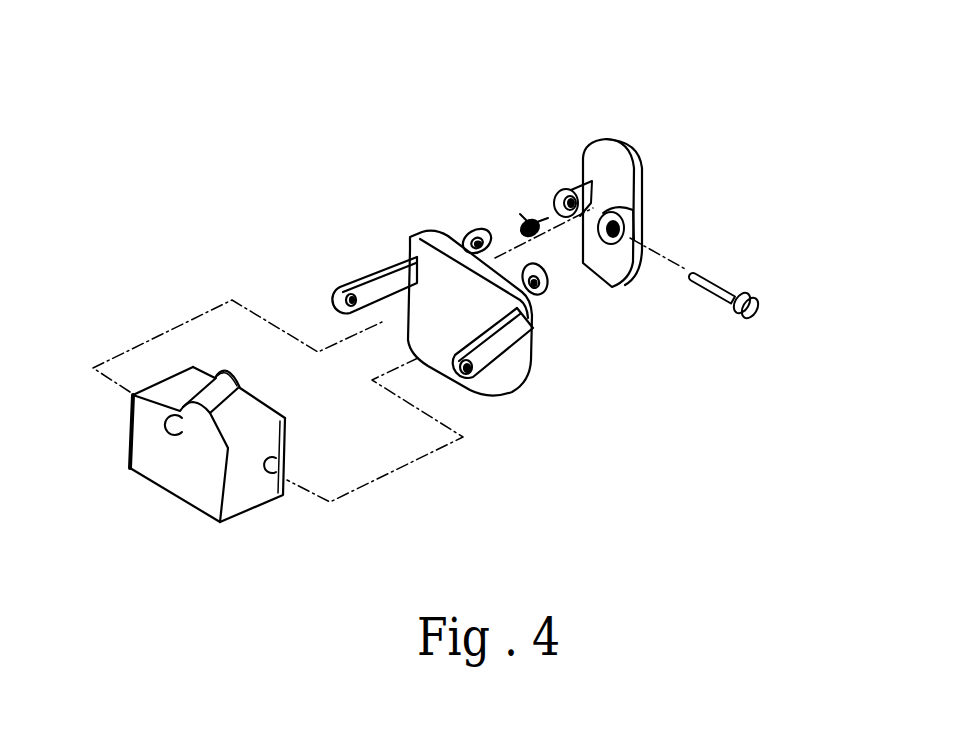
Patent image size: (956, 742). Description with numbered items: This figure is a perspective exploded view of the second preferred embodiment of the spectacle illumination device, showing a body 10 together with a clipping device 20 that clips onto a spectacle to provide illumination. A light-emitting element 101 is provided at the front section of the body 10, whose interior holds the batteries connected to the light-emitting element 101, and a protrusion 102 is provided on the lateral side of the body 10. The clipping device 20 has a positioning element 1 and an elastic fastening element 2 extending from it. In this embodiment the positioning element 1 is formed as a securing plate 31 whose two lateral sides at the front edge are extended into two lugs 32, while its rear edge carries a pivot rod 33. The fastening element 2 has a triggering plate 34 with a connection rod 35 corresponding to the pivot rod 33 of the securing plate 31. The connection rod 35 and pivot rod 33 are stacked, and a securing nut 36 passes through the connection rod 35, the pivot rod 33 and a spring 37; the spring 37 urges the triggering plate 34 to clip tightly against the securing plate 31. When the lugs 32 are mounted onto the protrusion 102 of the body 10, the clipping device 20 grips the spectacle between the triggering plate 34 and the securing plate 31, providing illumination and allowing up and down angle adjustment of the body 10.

The positioning element 1 is at (392, 227).
The elastic fastening element 2 is at (575, 147).
The body 10 is at (190, 514).
The light-emitting element 101 is at (175, 437).
The protrusion 102 is at (268, 474).
The clipping device 20 is at (404, 206).
The securing plate 31 is at (505, 348).
The lug 32 is at (360, 262).
The pivot rod 33 is at (472, 233).
The triggering plate 34 is at (645, 175).
The connection rod 35 is at (558, 194).
The securing nut 36 is at (713, 310).
The spring 37 is at (522, 217).